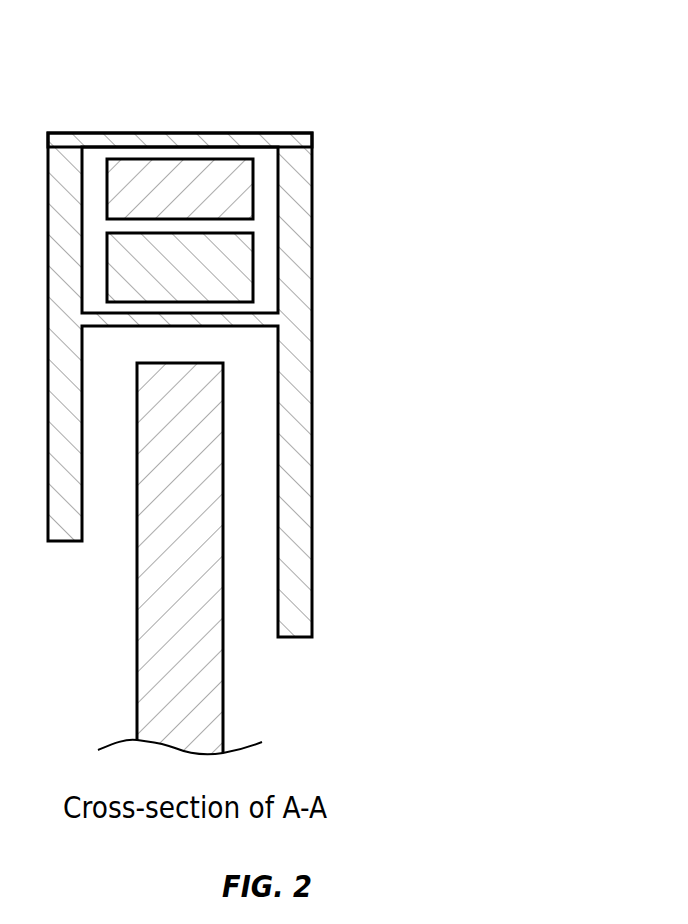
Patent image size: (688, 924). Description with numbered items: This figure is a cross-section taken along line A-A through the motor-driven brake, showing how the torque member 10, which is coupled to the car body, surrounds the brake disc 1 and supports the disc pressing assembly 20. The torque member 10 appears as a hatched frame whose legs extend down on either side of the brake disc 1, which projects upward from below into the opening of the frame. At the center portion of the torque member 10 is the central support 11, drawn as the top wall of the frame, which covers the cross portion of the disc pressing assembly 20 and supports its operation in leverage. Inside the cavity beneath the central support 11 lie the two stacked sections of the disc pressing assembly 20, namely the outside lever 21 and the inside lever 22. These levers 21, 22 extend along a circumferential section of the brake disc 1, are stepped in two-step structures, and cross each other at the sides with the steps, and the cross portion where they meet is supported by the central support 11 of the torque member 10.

The brake disc 1 is at (206, 700).
The torque member 10 is at (298, 488).
The central support 11 is at (233, 140).
The disc pressing assembly 20 is at (312, 230).
The outside lever 21 is at (225, 205).
The inside lever 22 is at (225, 253).